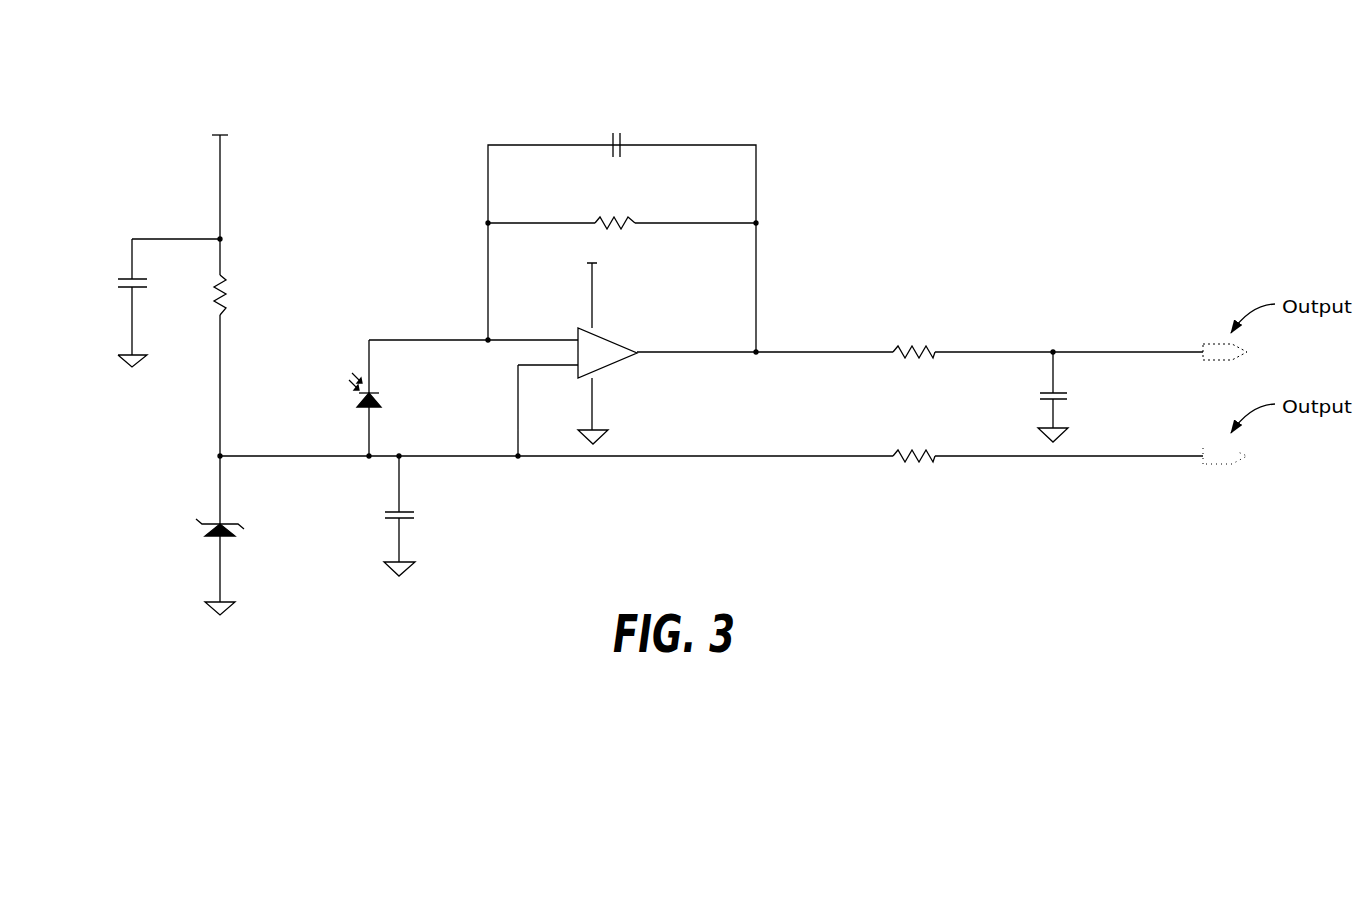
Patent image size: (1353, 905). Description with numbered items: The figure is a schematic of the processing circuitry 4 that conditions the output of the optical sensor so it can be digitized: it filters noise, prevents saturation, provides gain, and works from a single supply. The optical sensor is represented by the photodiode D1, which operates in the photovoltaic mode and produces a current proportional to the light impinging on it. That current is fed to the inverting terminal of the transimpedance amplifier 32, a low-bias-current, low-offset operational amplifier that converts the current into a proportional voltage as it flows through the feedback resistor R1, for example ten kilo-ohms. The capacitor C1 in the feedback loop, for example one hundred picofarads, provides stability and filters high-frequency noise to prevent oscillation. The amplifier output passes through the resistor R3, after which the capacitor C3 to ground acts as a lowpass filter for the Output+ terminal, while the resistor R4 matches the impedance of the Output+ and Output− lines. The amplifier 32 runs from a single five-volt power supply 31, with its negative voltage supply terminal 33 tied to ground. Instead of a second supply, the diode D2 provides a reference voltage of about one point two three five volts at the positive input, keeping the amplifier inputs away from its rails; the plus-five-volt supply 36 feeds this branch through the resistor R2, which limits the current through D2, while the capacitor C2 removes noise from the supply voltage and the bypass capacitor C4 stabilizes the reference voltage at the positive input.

The processing circuitry 4 is at (950, 119).
The +5 volt supply 36 is at (228, 104).
The 5-volt power supply 31 is at (556, 251).
The amplifier 32 is at (620, 379).
The negative voltage supply terminal 33 is at (576, 427).
The feedback resistor R1 is at (622, 206).
The resistor R2 is at (234, 296).
The resistor R3 is at (915, 335).
The resistor R4 is at (911, 440).
The capacitor C1 is at (615, 166).
The capacitor C2 is at (104, 281).
The capacitor C3 is at (1074, 388).
The bypass capacitor C4 is at (414, 503).
The photodiode D1 is at (343, 398).
The diode D2 is at (186, 503).